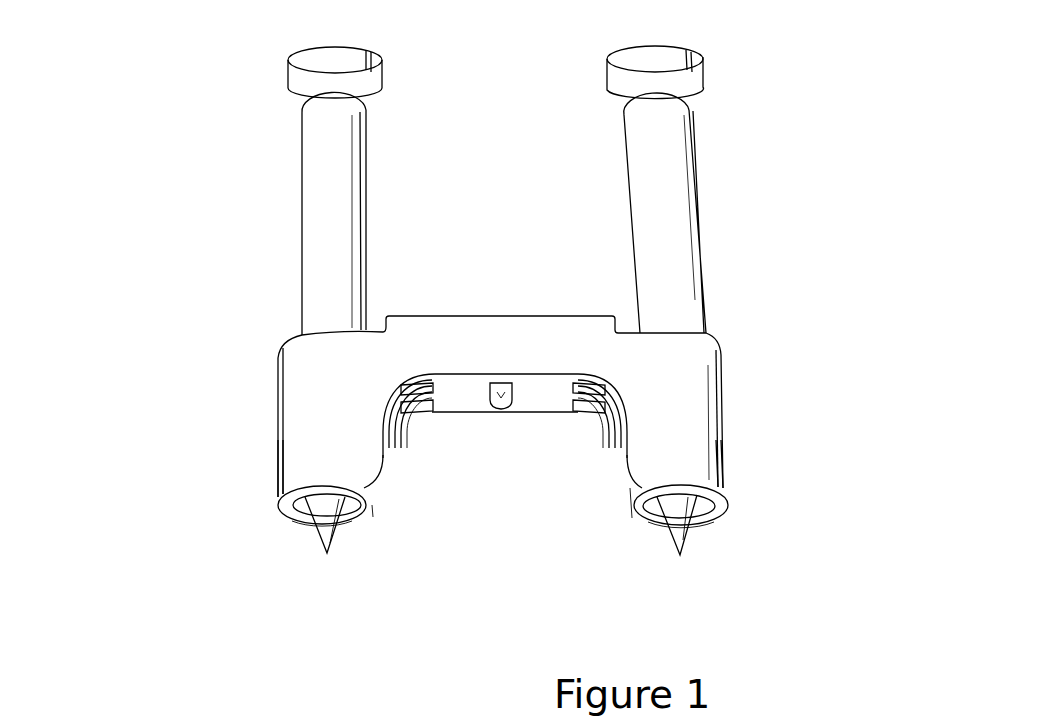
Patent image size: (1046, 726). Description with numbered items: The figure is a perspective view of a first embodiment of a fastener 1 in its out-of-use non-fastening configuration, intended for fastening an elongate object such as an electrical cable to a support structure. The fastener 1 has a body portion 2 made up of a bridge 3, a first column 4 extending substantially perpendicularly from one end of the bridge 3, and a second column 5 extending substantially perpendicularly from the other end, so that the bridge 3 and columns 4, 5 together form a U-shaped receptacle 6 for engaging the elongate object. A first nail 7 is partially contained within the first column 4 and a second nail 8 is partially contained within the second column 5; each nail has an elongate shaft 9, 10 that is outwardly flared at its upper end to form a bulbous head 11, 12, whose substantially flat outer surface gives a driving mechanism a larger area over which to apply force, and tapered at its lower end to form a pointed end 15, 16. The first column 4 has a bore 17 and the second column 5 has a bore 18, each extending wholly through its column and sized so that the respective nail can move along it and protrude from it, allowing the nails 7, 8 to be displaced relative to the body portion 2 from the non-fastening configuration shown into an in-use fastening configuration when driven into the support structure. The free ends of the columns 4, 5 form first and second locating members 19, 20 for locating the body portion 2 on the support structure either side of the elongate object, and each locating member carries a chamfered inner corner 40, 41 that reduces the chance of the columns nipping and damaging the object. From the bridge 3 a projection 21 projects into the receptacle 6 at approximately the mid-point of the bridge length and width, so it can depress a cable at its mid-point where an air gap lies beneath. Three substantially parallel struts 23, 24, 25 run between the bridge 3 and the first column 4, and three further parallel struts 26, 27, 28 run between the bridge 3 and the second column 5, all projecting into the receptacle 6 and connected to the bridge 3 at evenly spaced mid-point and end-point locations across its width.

The fastener 1 is at (152, 136).
The body portion 2 is at (553, 270).
The bridge 3 is at (497, 348).
The first column 4 is at (312, 427).
The second column 5 is at (700, 412).
The U-shaped receptacle 6 is at (545, 530).
The first nail 7 is at (290, 300).
The second nail 8 is at (722, 305).
The elongate shaft 9 is at (313, 185).
The elongate shaft 10 is at (672, 193).
The bulbous head 11 is at (300, 67).
The bulbous head 12 is at (662, 62).
The pointed end 15 is at (318, 526).
The pointed end 16 is at (686, 527).
The bore 17 is at (308, 506).
The bore 18 is at (703, 505).
The first locating member 19 is at (298, 478).
The second locating member 20 is at (712, 475).
The projection 21 is at (500, 410).
The strut 23 is at (388, 420).
The strut 24 is at (413, 418).
The strut 25 is at (426, 418).
The strut 26 is at (572, 420).
The strut 27 is at (587, 420).
The strut 28 is at (598, 420).
The chamfered inner corner 40 is at (366, 526).
The chamfered inner corner 41 is at (630, 522).